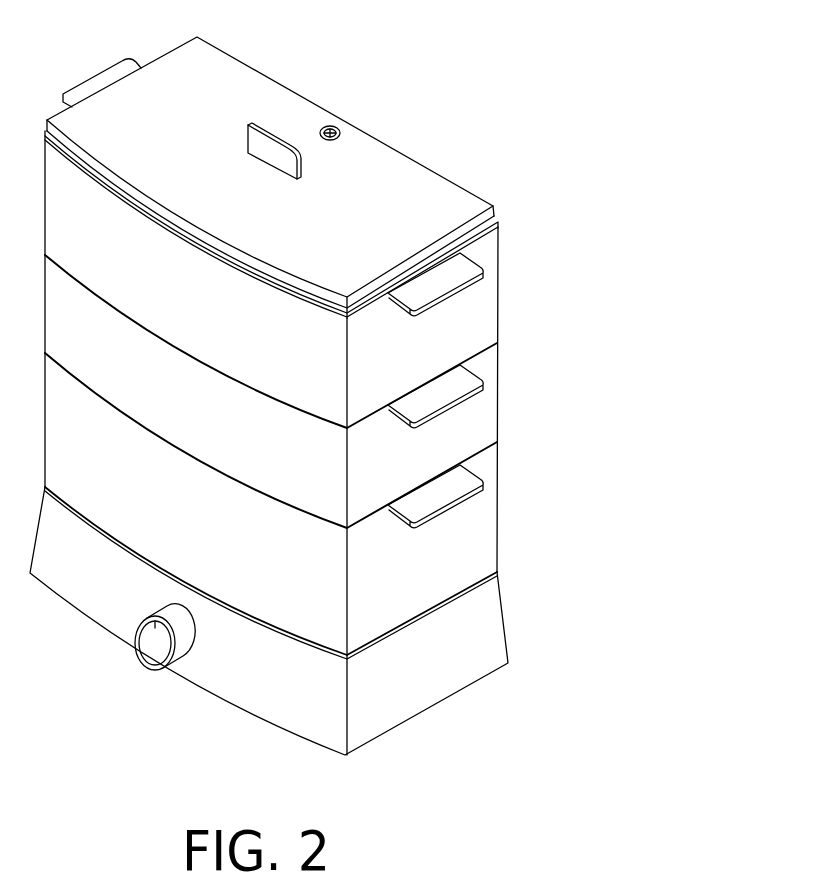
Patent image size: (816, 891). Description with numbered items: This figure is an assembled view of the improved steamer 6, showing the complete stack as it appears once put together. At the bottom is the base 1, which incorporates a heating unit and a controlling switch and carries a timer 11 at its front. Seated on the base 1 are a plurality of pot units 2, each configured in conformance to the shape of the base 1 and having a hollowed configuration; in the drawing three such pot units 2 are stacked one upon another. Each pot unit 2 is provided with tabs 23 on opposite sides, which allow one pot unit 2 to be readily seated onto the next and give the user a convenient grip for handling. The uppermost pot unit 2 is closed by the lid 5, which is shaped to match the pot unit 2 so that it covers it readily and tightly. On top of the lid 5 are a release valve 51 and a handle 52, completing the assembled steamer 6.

The base 1 is at (269, 621).
The timer 11 is at (153, 652).
The pot unit 2 is at (317, 393).
The tabs 23 is at (465, 266).
The lid 5 is at (286, 165).
The release valve 51 is at (330, 130).
The handle 52 is at (276, 140).
The steamer 6 is at (465, 113).